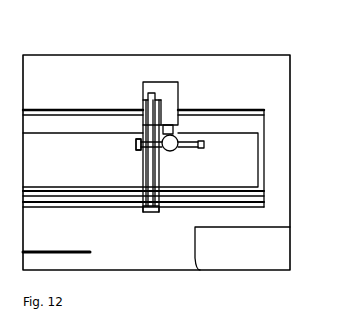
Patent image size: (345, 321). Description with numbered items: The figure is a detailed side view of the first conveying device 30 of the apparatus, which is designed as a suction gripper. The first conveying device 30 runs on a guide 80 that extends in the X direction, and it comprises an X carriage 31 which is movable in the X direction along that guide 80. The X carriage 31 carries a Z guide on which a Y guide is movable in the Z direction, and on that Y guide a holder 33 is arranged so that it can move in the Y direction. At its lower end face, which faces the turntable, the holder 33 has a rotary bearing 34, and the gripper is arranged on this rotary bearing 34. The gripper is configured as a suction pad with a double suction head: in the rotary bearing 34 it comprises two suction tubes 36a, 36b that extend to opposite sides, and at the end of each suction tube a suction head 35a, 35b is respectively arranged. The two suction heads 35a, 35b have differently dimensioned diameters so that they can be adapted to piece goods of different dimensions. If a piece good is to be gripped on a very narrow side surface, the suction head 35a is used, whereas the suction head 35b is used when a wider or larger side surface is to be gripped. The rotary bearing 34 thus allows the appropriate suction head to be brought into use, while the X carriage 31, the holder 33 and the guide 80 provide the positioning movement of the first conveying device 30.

The first conveying device 30 is at (154, 71).
The X carriage 31 is at (147, 213).
The holder 33 is at (168, 94).
The rotary bearing 34 is at (168, 152).
The suction head 35a is at (201, 150).
The suction head 35b is at (139, 140).
The suction tube 36a is at (183, 150).
The suction tube 36b is at (137, 150).
The guide 80 is at (230, 125).